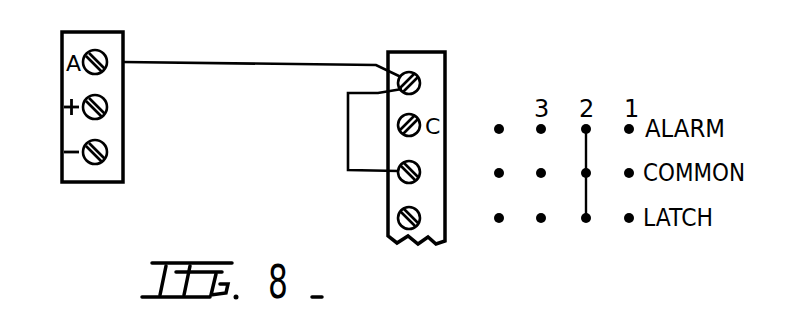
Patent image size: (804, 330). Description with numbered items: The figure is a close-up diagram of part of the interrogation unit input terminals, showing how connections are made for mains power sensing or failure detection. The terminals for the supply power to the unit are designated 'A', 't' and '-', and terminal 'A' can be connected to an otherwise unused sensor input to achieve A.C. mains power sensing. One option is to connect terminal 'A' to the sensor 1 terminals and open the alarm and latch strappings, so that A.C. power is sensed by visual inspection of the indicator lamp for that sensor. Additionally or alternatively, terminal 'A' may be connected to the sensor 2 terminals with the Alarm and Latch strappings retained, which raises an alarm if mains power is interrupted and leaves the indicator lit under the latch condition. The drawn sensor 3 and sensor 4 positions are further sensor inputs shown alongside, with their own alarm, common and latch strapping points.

The sensor 1 terminals 1 is at (419, 84).
The sensor 2 terminals 2 is at (419, 173).
The terminal 3 of terminal block 3 is at (419, 220).
The switch position 4 contacts 4 is at (498, 159).